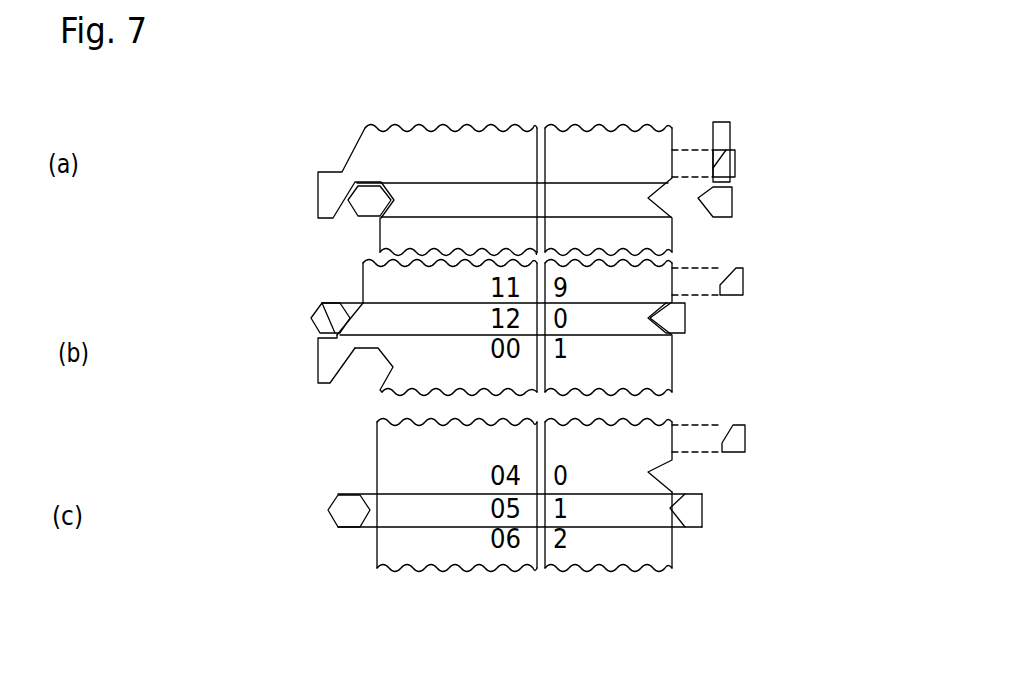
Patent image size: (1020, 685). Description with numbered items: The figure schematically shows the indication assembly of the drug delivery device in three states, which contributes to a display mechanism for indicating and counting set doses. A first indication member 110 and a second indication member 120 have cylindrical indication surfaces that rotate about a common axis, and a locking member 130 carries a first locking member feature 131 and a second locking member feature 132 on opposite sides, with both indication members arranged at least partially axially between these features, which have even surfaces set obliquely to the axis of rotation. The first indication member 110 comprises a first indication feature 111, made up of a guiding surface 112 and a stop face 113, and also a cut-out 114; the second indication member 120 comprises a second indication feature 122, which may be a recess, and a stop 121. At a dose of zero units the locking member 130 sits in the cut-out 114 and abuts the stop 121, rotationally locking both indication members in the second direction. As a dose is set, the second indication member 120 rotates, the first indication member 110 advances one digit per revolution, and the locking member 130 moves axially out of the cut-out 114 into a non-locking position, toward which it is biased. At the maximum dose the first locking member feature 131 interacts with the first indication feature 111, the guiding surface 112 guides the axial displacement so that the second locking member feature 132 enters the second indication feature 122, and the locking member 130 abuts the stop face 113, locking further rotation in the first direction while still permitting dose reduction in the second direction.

The first indication member 110 is at (387, 145).
The second indication member 120 is at (580, 142).
The stop 121 is at (735, 157).
The locking member 130 is at (715, 198).
The first locking member feature 131 is at (323, 303).
The second locking member feature 132 is at (663, 322).
The guiding surface 112 is at (323, 303).
The stop face 113 is at (328, 338).
The first indication feature 111 is at (280, 398).
The cut-out 114 is at (383, 380).
The second indication feature 122 is at (660, 462).